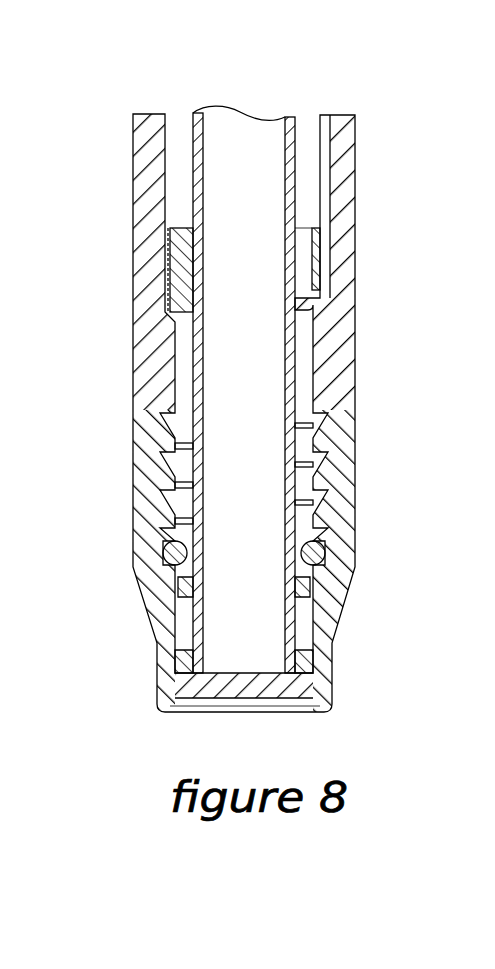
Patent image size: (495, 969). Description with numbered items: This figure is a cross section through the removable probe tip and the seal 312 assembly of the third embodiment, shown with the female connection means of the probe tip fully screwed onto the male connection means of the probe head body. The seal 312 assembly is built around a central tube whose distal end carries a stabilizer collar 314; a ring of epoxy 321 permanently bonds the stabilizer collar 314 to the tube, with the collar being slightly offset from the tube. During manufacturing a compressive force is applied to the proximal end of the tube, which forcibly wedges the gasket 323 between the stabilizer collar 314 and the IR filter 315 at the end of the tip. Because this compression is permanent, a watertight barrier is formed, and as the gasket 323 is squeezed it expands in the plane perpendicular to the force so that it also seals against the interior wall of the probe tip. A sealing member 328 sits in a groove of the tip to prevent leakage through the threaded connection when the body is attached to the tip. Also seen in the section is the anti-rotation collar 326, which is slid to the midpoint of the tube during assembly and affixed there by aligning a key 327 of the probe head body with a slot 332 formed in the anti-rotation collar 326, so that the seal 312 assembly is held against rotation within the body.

The seal 312 is at (347, 615).
The stabilizer collar 314 is at (180, 648).
The IR filter 315 is at (312, 685).
The ring of epoxy 321 is at (318, 578).
The gasket 323 is at (320, 645).
The anti-rotation collar 326 is at (310, 220).
The key 327 is at (167, 278).
The sealing member 328 is at (164, 557).
The slot 332 is at (167, 238).